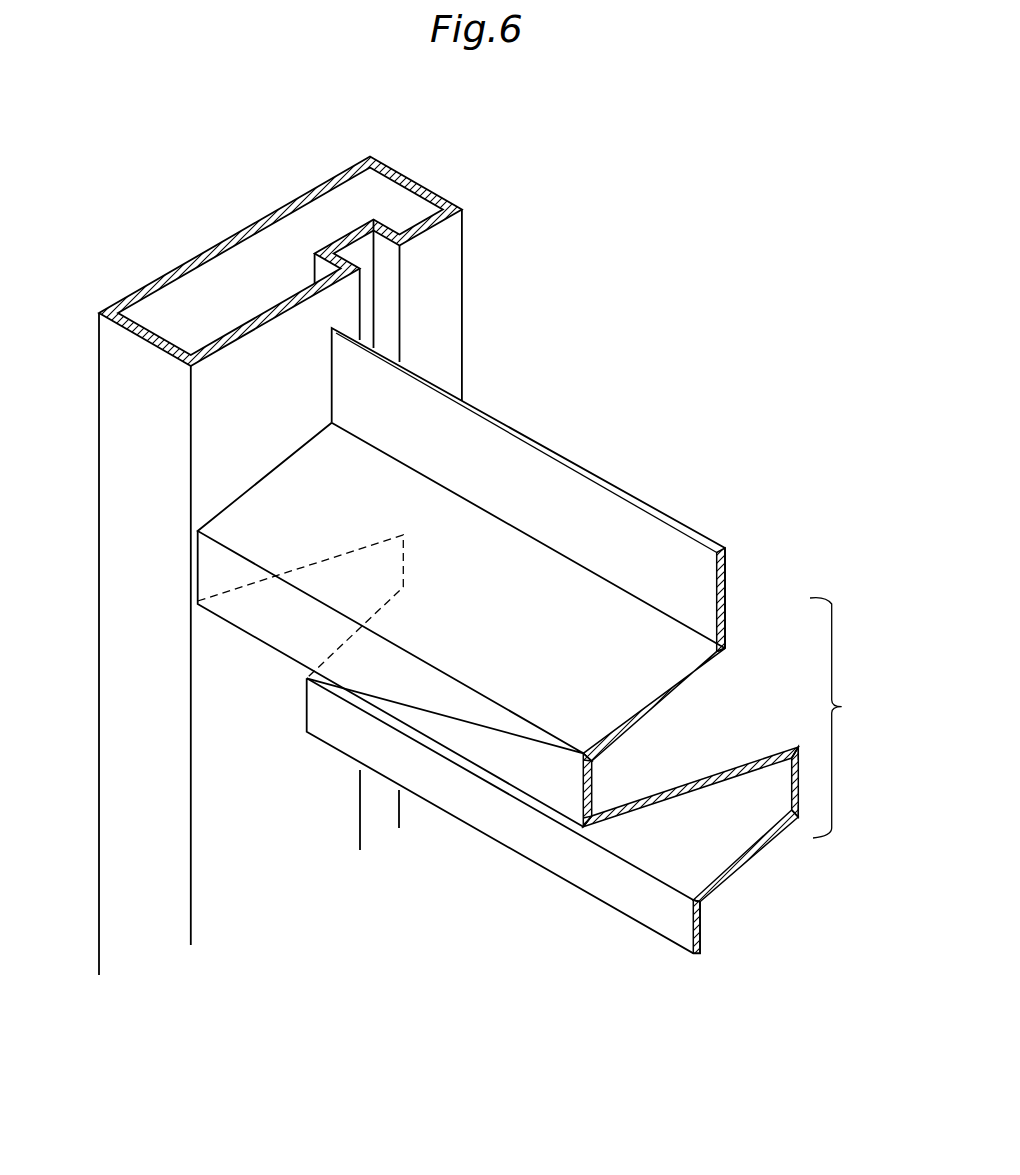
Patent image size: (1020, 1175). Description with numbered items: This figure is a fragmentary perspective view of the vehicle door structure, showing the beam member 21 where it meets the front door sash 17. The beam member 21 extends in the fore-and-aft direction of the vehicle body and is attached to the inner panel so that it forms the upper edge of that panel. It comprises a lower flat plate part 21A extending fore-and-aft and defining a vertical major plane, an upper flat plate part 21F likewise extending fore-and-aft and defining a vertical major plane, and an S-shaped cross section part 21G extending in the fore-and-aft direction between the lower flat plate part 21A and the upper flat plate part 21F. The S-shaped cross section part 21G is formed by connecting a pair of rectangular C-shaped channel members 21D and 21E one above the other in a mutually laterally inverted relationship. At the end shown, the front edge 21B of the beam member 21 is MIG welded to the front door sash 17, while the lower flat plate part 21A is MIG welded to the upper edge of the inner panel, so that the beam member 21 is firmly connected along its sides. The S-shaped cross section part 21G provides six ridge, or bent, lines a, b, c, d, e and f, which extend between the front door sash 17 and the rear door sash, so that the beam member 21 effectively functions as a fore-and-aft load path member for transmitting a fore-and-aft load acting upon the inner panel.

The front door sash 17 is at (205, 718).
The beam member 21 is at (470, 643).
The lower flat plate part 21A is at (612, 893).
The front edge 21B is at (200, 572).
The rectangular C-shaped channel member 21D is at (595, 786).
The rectangular C-shaped channel member 21E is at (777, 783).
The upper flat plate part 21F is at (670, 540).
The S-shaped cross section part 21G is at (855, 718).
The ridge line a is at (727, 650).
The ridge line b is at (583, 752).
The ridge line c is at (583, 826).
The ridge line d is at (797, 746).
The ridge line e is at (798, 818).
The ridge line f is at (702, 904).